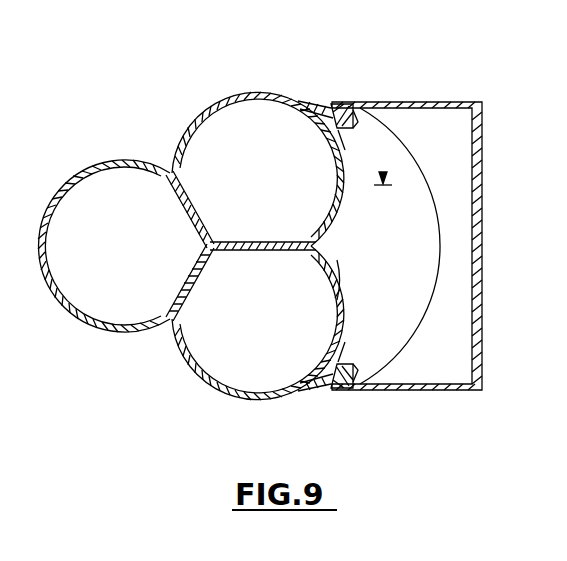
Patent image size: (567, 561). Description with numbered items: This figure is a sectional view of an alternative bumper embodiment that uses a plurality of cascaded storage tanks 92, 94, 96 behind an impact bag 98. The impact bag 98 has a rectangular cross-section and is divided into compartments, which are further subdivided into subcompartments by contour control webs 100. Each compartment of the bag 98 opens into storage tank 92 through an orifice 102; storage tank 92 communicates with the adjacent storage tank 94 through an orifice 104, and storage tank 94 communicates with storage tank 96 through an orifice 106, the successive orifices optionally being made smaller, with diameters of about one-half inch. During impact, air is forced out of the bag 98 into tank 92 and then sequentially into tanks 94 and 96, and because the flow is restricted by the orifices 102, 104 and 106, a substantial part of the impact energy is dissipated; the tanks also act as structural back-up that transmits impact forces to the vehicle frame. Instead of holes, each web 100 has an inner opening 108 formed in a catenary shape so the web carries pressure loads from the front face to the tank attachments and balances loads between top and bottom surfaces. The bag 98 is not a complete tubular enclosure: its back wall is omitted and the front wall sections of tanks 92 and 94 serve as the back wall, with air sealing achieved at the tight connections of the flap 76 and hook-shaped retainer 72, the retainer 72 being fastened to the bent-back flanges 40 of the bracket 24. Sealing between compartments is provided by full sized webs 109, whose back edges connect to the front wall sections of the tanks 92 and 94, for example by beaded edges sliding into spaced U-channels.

The bracket 24 is at (338, 137).
The bent-back flanges 40 is at (332, 116).
The hook-shaped retainer 72 is at (355, 122).
The flat edge portion 76 is at (328, 104).
The storage tank 92 is at (238, 383).
The storage tank 94 is at (247, 98).
The storage tank 96 is at (113, 160).
The impact bag 98 is at (482, 276).
The contour control webs 100 is at (428, 362).
The orifice 102 is at (338, 285).
The orifice 104 is at (257, 240).
The orifice 106 is at (186, 211).
The inner opening 108 is at (429, 227).
The full sized webs 109 is at (383, 172).